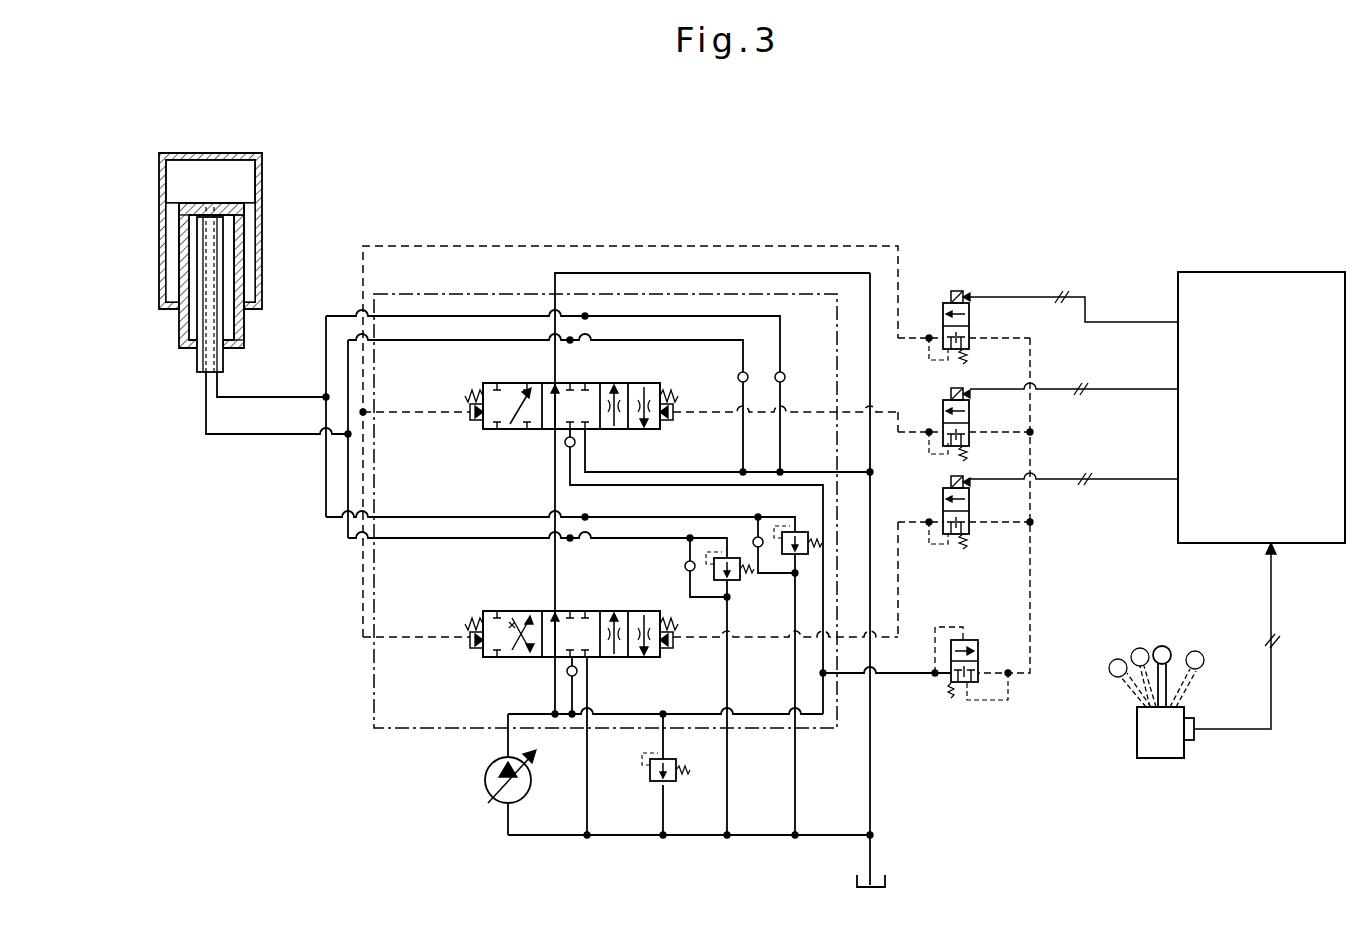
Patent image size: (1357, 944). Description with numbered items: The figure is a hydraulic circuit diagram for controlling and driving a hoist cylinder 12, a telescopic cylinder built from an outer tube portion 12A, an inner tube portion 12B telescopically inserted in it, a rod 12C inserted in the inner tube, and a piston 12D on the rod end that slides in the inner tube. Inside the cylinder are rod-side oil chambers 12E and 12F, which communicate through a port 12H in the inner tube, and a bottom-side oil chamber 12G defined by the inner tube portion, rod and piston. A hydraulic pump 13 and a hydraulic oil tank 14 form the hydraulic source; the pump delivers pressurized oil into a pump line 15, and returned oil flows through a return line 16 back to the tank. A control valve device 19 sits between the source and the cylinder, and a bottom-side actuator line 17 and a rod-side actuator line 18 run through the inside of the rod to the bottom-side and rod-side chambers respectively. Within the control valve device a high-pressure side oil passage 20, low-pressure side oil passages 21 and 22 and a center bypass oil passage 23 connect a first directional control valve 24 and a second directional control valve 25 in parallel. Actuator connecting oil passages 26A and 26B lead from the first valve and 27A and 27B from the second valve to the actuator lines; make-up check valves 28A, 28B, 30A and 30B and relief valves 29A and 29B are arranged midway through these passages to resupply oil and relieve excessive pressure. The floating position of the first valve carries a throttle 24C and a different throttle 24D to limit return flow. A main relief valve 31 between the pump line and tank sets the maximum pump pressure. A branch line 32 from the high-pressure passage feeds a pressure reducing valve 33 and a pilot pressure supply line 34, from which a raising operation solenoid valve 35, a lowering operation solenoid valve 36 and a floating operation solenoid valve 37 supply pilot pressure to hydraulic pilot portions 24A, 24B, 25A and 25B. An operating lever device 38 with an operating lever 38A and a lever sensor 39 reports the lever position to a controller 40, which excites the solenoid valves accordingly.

The hoist cylinder 12 is at (185, 145).
The outer tube portion 12A is at (160, 171).
The inner tube portion 12B is at (240, 237).
The rod 12C is at (197, 370).
The piston 12D is at (222, 210).
The rod-side oil chamber 12E is at (186, 274).
The rod-side oil chamber 12F is at (250, 277).
The bottom-side oil chamber 12G is at (248, 186).
The port 12H is at (184, 211).
The hydraulic pump 13 is at (485, 778).
The hydraulic oil tank 14 is at (879, 886).
The pump line 15 is at (508, 742).
The return line 16 is at (872, 797).
The bottom-side actuator line 17 is at (280, 396).
The rod-side actuator line 18 is at (275, 435).
The control valve device 19 is at (406, 285).
The high-pressure side oil passage 20 is at (781, 713).
The low-pressure side oil passage 21 is at (588, 770).
The low-pressure side oil passage 22 is at (812, 472).
The center bypass oil passage 23 is at (557, 497).
The first directional control valve 24 is at (588, 632).
The hydraulic pilot portion 24A is at (478, 650).
The hydraulic pilot portion 24B is at (671, 652).
The throttle 24C is at (605, 611).
The different throttle 24D is at (655, 606).
The second directional control valve 25 is at (580, 418).
The hydraulic pilot portion 25A is at (477, 424).
The hydraulic pilot portion 25B is at (671, 420).
The actuator connecting oil passage 26A is at (484, 517).
The actuator connecting oil passage 26B is at (447, 539).
The actuator connecting oil passage 27A is at (506, 316).
The actuator connecting oil passage 27B is at (470, 341).
The make-up check valve 28A is at (753, 540).
The make-up check valve 28B is at (685, 566).
The relief valve 29A is at (801, 531).
The relief valve 29B is at (741, 576).
The make-up check valve 30A is at (787, 377).
The make-up check valve 30B is at (738, 377).
The main relief valve 31 is at (677, 781).
The branch line 32 is at (907, 675).
The pressure reducing valve 33 is at (965, 640).
The pilot pressure supply line 34 is at (1032, 500).
The raising operation solenoid valve 35 is at (943, 322).
The lowering operation solenoid valve 36 is at (943, 418).
The floating operation solenoid valve 37 is at (943, 506).
The operating lever device 38 is at (1163, 689).
The operating lever 38A is at (1163, 676).
The lever sensor 39 is at (1190, 742).
The controller 40 is at (1190, 297).